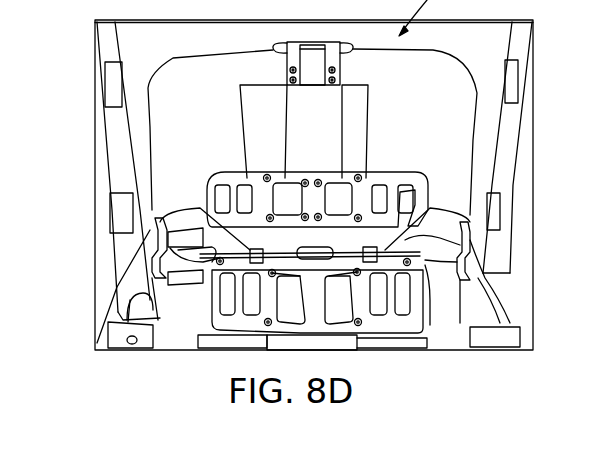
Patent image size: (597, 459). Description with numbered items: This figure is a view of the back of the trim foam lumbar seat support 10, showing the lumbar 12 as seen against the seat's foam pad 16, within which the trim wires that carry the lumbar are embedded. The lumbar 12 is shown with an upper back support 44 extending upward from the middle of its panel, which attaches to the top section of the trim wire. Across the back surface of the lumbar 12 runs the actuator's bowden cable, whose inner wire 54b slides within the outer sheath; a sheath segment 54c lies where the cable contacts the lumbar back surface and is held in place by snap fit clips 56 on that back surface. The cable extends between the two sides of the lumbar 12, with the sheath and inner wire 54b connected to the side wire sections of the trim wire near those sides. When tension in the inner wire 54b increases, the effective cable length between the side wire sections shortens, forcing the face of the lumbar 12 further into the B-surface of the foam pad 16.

The trim foam lumbar seat support 10 is at (158, 50).
The foam pad 16 is at (183, 53).
The upper back support 44 is at (357, 127).
The lumbar 12 is at (397, 173).
The inner wire 54b is at (167, 303).
The sheath segment 54c is at (287, 252).
The snap fit clips 56 is at (236, 250).